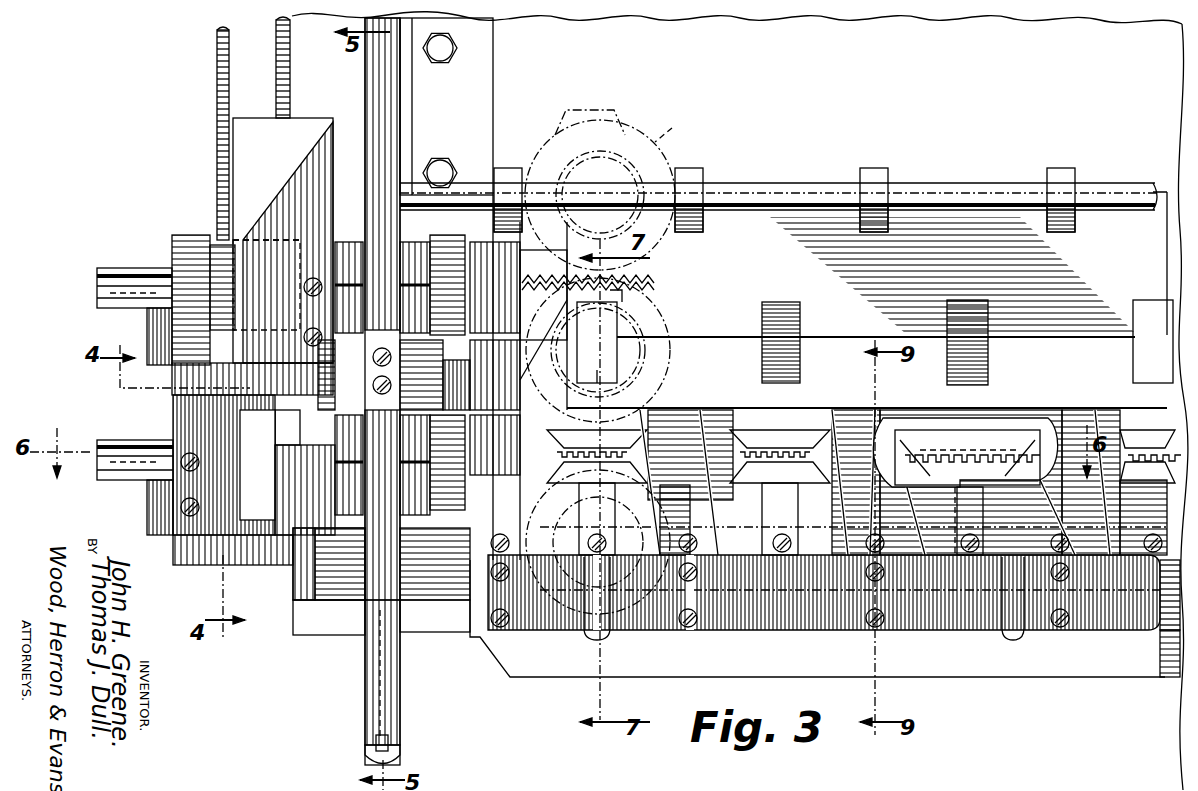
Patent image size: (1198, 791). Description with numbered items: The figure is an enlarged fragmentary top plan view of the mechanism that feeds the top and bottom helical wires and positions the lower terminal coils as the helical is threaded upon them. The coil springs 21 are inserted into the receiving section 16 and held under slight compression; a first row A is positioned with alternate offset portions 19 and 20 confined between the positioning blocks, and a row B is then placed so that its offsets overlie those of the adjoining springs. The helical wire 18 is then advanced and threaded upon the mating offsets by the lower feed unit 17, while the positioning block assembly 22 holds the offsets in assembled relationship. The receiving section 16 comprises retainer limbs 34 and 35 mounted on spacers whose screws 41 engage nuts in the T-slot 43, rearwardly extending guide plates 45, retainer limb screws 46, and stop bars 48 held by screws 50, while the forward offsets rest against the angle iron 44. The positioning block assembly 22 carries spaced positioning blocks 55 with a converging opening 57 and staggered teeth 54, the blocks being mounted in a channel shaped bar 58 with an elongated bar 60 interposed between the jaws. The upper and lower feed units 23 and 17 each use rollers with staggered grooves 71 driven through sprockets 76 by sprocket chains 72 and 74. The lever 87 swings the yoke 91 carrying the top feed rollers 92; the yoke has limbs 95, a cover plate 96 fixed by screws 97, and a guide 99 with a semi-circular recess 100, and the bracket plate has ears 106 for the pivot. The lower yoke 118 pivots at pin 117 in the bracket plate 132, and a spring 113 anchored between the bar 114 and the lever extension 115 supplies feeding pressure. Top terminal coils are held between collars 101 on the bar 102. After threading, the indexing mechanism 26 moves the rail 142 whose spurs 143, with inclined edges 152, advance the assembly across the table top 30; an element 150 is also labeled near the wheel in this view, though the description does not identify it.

The table top 30 is at (1055, 38).
The sprocket chain 74 is at (217, 61).
The sprocket chain 72 is at (276, 54).
The lever 87 is at (368, 79).
The swinging yoke 91 is at (470, 230).
The cover plate 96 is at (261, 133).
The lower feed unit 23 is at (252, 172).
The sprockets 76 is at (282, 242).
The screws 97 is at (315, 278).
The guide 99 is at (118, 270).
The semi-circular recess 100 is at (108, 292).
The staggered grooves 71 is at (350, 242).
The limbs 95 is at (186, 244).
The ears 106 is at (302, 396).
The lower feed unit 17 is at (320, 500).
The bracket plate 132 is at (210, 565).
The pivot pin 117 is at (337, 602).
The swinging yoke 118 is at (428, 632).
The bar 114 is at (365, 665).
The lever extension 115 is at (380, 700).
The spring 113 is at (365, 760).
The bar 102 is at (965, 197).
The collars 101 is at (691, 170).
The indexing rail 142 is at (753, 236).
The offset portion 20 is at (597, 105).
The coil springs 21 is at (655, 488).
The row of coil springs A is at (665, 332).
The helical wire 18 is at (650, 283).
The coil engaging spurs 143 is at (597, 370).
The pawl 150 is at (622, 298).
The inclined upper edge 152 is at (805, 352).
The indexing mechanism 26 is at (1050, 300).
The guide plates 45 is at (686, 406).
The positioning blocks 55 is at (768, 419).
The teeth 54 is at (800, 423).
The positioning block assembly 22 is at (818, 425).
The channel shaped bar 58 is at (1005, 412).
The elongated bar 60 is at (1039, 412).
The converging opening 57 is at (1160, 440).
The screws 41 is at (705, 540).
The screws 50 is at (985, 548).
The receiving section 16 is at (938, 610).
The retainer limb 35 is at (592, 638).
The screws 46 is at (690, 636).
The retainer limb 34 is at (761, 633).
The stop bars 48 is at (803, 634).
The angle iron 44 is at (836, 674).
The offset portion 19 is at (612, 634).
The row of coil springs B is at (665, 506).
The T-slot 43 is at (478, 630).
The top feed rollers 92 is at (530, 250).